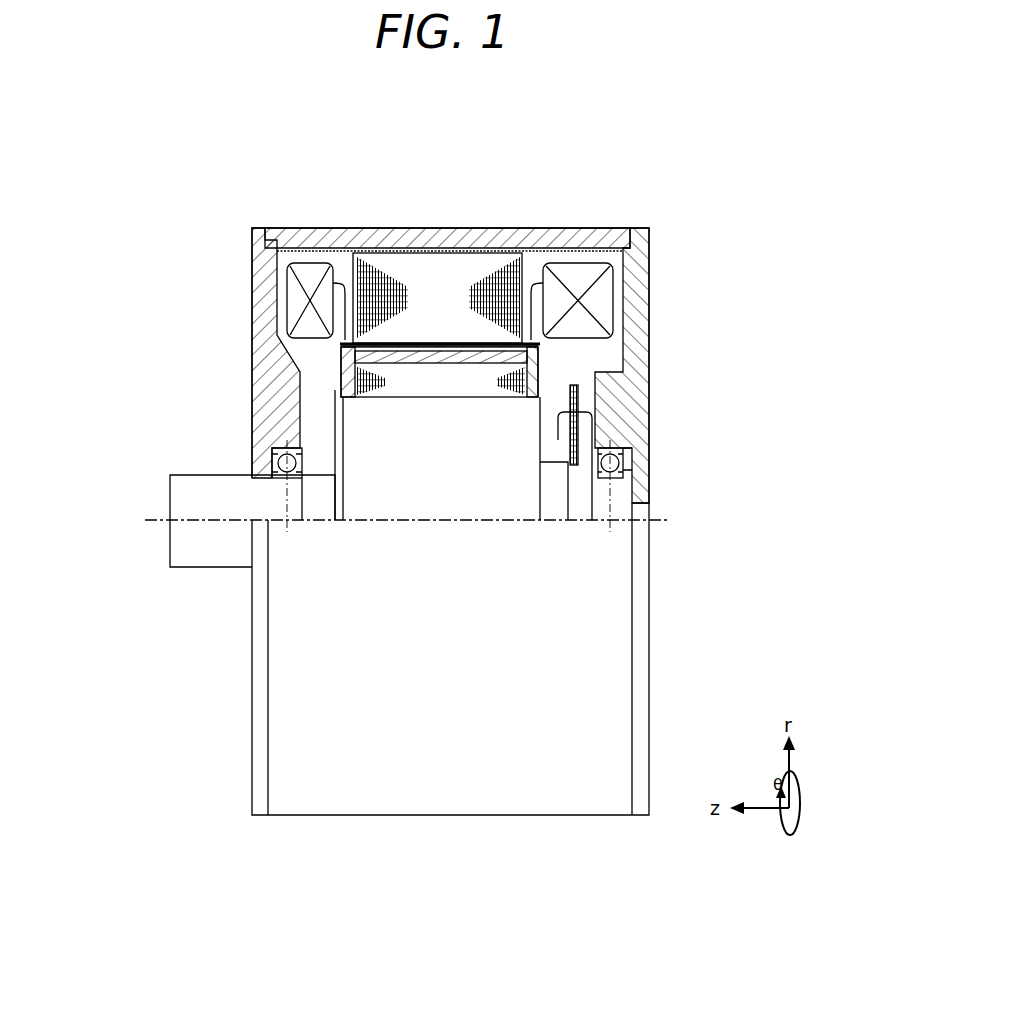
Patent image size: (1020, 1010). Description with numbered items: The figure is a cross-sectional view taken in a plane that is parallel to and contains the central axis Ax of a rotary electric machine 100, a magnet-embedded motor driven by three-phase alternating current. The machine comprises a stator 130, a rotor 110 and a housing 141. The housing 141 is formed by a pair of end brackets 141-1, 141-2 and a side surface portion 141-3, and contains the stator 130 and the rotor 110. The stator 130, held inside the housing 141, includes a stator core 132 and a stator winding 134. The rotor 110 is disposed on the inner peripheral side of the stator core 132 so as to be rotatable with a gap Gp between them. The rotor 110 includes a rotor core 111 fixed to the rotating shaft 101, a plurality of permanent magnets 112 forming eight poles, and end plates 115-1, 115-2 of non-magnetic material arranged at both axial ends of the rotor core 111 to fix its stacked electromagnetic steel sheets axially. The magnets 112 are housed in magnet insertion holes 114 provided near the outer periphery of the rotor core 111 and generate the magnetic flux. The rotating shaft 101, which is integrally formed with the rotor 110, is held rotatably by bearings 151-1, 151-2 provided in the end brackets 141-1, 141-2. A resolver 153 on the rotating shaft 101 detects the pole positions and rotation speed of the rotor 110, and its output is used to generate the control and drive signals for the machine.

The rotary electric machine 100 is at (642, 186).
The rotating shaft 101 is at (178, 498).
The rotor 110 is at (548, 378).
The rotor core 111 is at (492, 345).
The permanent magnets 112 is at (443, 410).
The magnet insertion holes 114 is at (400, 358).
The end plate 115-1 is at (534, 356).
The end plate 115-2 is at (346, 379).
The stator 130 is at (366, 240).
The stator core 132 is at (425, 275).
The stator winding 134 is at (300, 302).
The housing 141 is at (246, 226).
The end bracket 141-1 is at (636, 278).
The end bracket 141-2 is at (266, 372).
The side surface portion 141-3 is at (290, 228).
The bearing 151-1 is at (613, 462).
The bearing 151-2 is at (289, 454).
The resolver 153 is at (576, 422).
The gap Gp is at (538, 348).
The central axis Ax is at (665, 523).